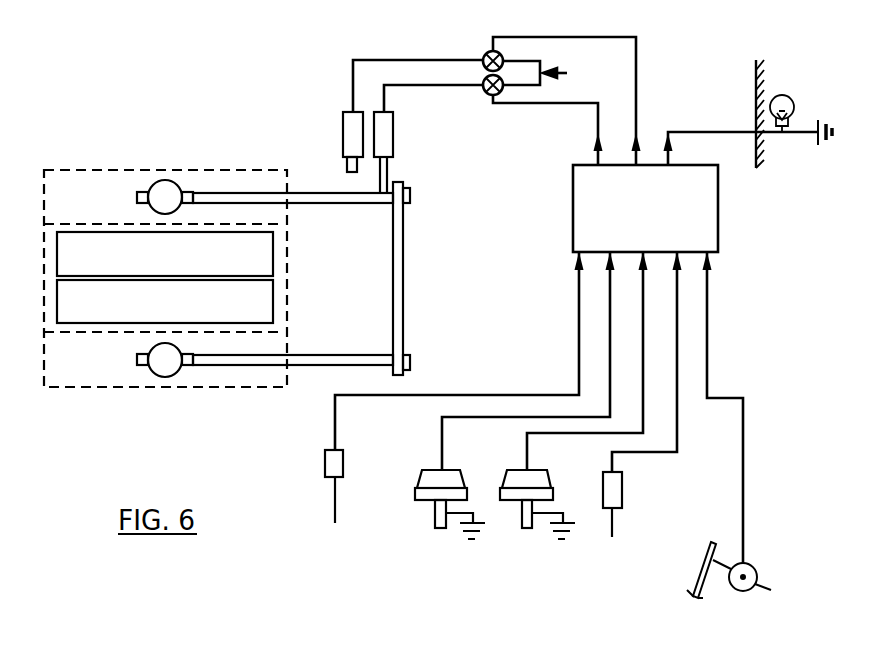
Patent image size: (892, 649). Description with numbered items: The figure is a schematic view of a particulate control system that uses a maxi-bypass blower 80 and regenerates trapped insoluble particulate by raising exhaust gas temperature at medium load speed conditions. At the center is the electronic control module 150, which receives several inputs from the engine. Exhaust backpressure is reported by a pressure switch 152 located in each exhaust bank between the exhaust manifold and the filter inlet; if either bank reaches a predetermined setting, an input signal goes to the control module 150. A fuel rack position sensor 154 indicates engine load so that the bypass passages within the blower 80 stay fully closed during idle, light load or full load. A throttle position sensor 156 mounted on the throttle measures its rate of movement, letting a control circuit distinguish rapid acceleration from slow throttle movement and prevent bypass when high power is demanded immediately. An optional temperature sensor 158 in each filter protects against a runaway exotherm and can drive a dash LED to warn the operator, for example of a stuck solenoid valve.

The maxi-bypass blower 80 is at (260, 305).
The electronic control module 150 is at (573, 190).
The pressure switch 152 is at (422, 477).
The fuel rack position sensor 154 is at (622, 494).
The throttle position sensor 156 is at (752, 567).
The temperature sensor 158 is at (343, 462).